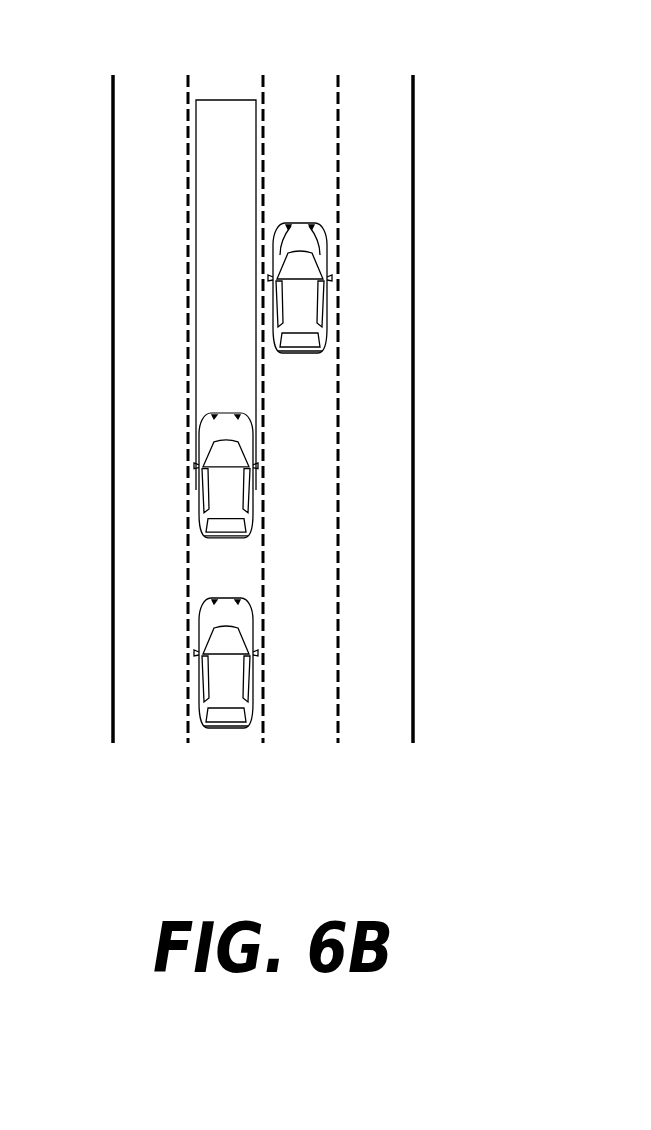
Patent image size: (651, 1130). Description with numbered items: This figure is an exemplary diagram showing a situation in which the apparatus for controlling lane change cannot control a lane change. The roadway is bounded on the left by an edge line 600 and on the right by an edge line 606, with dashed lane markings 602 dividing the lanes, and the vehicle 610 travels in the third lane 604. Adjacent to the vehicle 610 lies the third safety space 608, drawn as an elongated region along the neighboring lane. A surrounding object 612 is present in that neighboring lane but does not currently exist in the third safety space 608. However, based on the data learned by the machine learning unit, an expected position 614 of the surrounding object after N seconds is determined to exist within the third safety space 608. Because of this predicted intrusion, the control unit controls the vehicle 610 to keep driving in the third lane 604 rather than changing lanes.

The left road boundary line 600 is at (148, 84).
The lane marking (dashed) 602 is at (224, 84).
The third lane 604 is at (302, 84).
The right road boundary line 606 is at (377, 84).
The third safety space 608 is at (196, 377).
The vehicle 610 is at (328, 300).
The surrounding object 612 is at (228, 729).
The expected position 614 is at (196, 522).